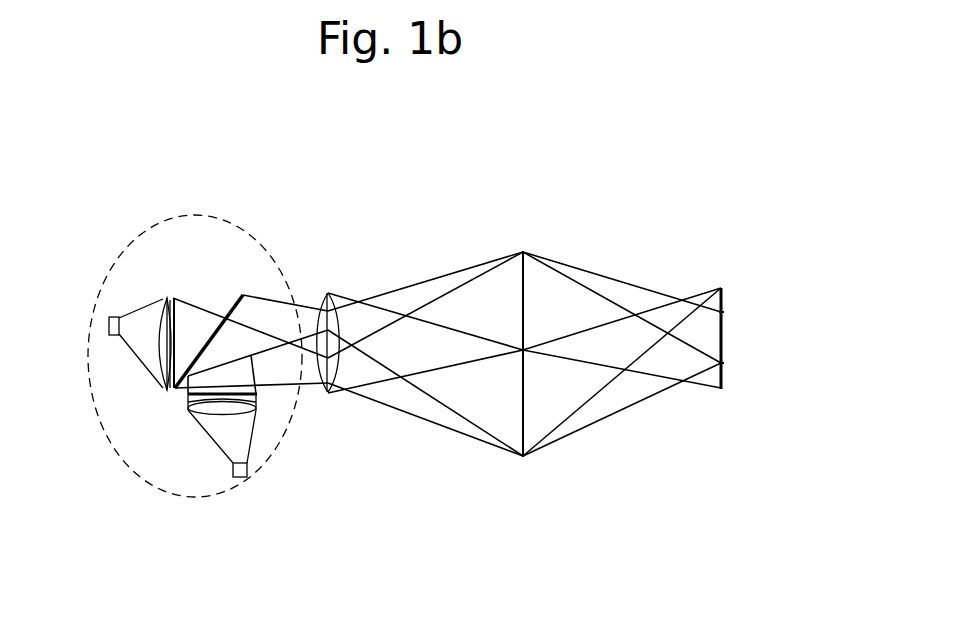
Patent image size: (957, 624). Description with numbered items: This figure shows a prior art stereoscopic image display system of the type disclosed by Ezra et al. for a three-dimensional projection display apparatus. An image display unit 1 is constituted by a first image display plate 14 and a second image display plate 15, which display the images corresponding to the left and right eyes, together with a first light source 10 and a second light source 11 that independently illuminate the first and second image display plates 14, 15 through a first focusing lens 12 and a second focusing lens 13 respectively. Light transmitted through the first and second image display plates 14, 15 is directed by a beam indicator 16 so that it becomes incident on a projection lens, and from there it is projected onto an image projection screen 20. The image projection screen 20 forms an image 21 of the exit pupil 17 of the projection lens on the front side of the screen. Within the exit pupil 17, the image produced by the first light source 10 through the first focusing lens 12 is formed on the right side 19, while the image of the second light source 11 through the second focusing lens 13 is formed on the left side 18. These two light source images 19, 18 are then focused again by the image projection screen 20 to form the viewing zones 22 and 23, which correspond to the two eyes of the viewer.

The image display unit 1 is at (157, 224).
The first light source 10 is at (107, 325).
The second light source 11 is at (246, 481).
The first focusing lens 12 is at (163, 306).
The second focusing lens 13 is at (200, 404).
The first image display plate 14 is at (175, 297).
The second image display plate 15 is at (259, 396).
The beam indicator 16 is at (226, 312).
The exit pupil 17 is at (318, 300).
The left side of the exit pupil 18 is at (331, 292).
The right side of the exit pupil 19 is at (333, 396).
The image projection screen 20 is at (524, 343).
The image of the exit pupil 21 is at (722, 327).
The viewing zone 22 is at (724, 312).
The viewing zone 23 is at (724, 363).